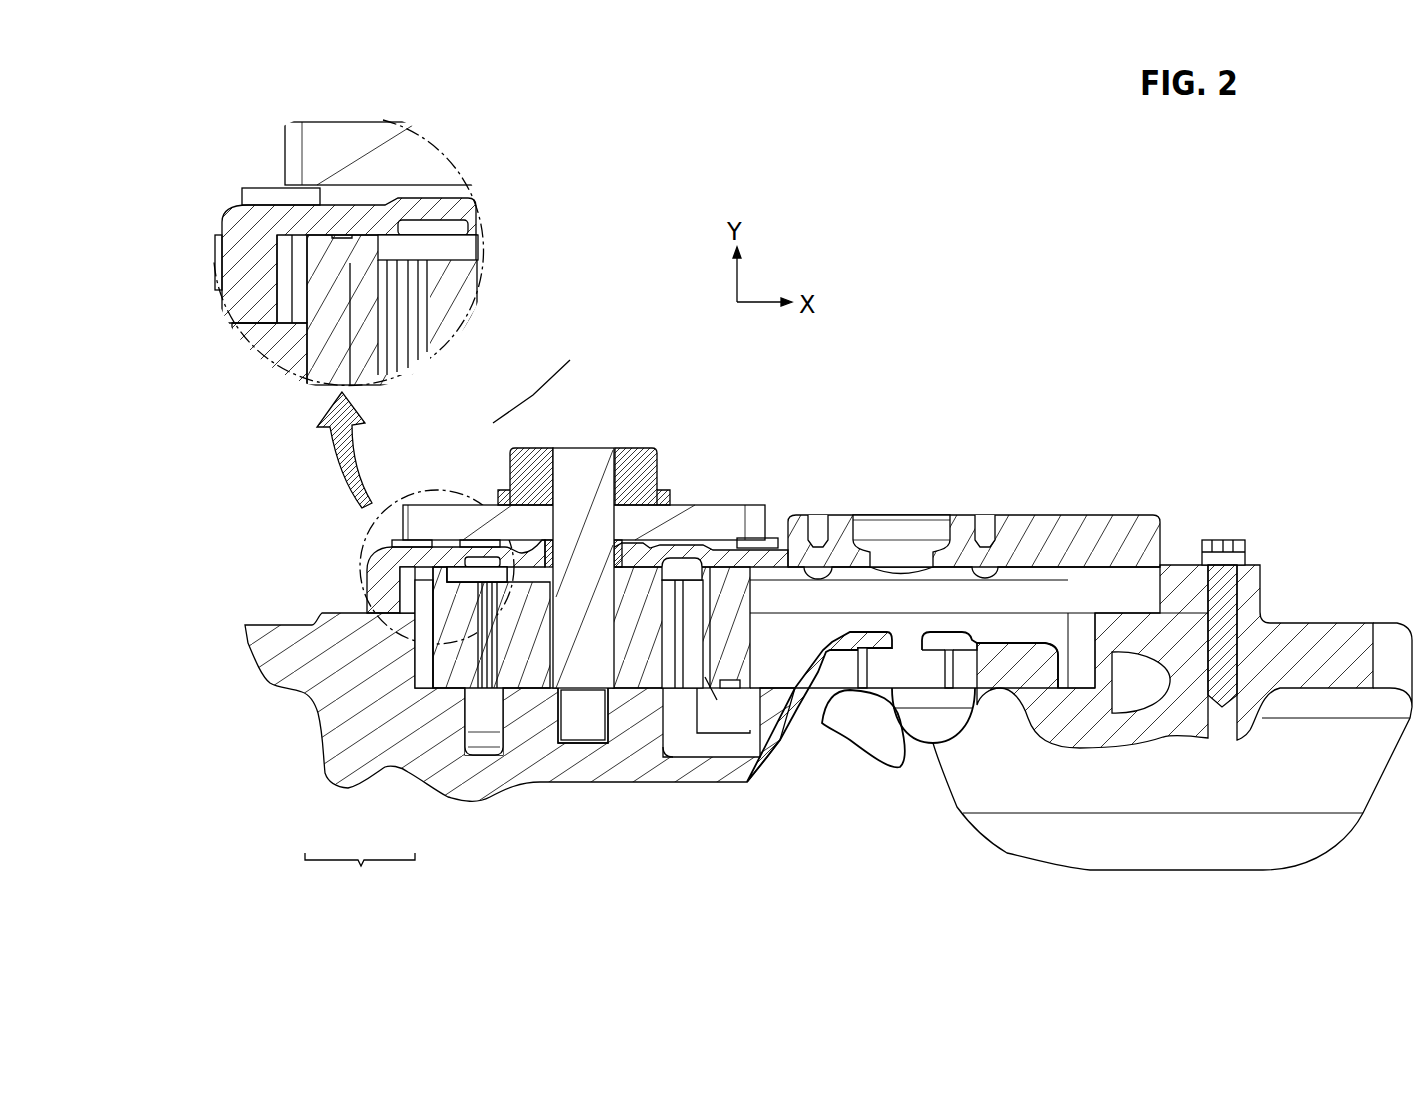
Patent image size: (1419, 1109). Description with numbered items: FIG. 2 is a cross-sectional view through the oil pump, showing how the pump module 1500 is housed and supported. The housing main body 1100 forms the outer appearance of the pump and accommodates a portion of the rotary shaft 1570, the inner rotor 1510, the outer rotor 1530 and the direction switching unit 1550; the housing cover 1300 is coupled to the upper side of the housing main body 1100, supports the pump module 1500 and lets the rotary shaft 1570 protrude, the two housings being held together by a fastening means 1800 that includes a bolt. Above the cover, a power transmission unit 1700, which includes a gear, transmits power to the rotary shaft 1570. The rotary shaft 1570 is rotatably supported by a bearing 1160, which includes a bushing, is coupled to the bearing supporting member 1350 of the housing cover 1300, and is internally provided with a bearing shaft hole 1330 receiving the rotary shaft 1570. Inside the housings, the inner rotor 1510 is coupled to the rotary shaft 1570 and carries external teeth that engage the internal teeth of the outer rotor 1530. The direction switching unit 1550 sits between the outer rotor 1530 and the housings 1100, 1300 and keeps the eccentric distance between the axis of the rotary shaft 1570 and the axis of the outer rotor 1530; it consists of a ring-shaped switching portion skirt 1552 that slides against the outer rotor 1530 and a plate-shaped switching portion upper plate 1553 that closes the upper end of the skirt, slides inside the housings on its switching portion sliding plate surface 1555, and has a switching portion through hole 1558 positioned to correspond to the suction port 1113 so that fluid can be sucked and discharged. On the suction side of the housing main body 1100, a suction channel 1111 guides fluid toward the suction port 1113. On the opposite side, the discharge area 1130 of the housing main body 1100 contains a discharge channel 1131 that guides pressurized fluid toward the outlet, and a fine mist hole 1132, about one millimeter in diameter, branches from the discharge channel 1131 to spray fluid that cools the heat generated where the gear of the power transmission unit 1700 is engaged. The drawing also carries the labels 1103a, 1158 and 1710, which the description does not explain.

The housing main body 1100 is at (240, 328).
The housing bottom portion 1103a is at (705, 677).
The suction channel 1111 is at (499, 731).
The suction port 1113 is at (433, 225).
The discharge area 1130 is at (1027, 617).
The discharge channel 1131 is at (793, 640).
The mist hole 1132 is at (753, 560).
The nut 1158 is at (690, 570).
The bearing 1160 is at (507, 490).
The housing cover 1300 is at (230, 253).
The bearing shaft hole 1330 is at (573, 743).
The bearing supporting member 1350 is at (617, 733).
The pump module 1500 is at (360, 873).
The inner rotor 1510 is at (503, 670).
The outer rotor 1530 is at (448, 670).
The direction switching unit 1550 is at (305, 832).
The switching portion skirt 1552 is at (397, 360).
The switching portion upper plate 1553 is at (478, 253).
The switching portion sliding plate surface 1555 is at (343, 327).
The switching portion through hole 1558 is at (452, 242).
The rotary shaft 1570 is at (593, 453).
The power transmission unit 1700 is at (360, 122).
The terminal shaft 1710 is at (637, 453).
The fastening means 1800 is at (260, 187).